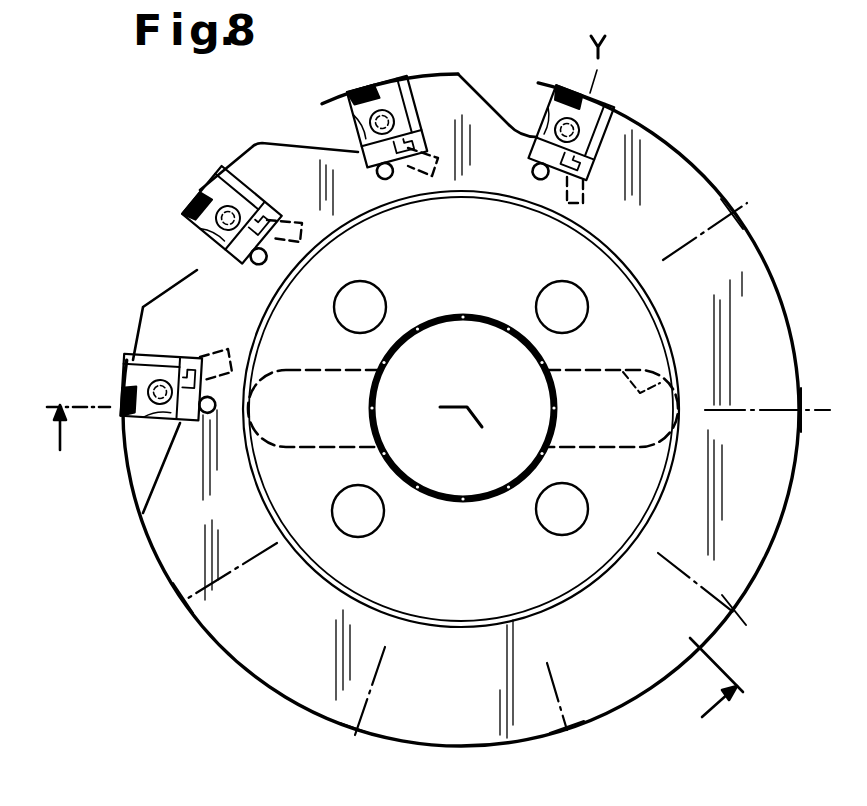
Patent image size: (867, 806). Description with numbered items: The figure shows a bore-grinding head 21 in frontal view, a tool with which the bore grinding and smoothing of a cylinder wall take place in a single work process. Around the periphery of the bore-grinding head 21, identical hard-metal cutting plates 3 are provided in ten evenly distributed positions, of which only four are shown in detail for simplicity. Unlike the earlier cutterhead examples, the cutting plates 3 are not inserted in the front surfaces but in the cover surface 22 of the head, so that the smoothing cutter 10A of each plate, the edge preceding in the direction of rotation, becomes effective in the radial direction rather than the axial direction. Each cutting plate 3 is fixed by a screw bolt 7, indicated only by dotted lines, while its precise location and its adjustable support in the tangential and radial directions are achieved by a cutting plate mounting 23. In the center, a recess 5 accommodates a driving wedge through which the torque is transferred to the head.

The cutting plate 3 is at (388, 83).
The recess 5 is at (660, 383).
The screw bolt 7 is at (203, 200).
The smoothing cutter 10A is at (203, 193).
The bore-grinding head 21 is at (438, 400).
The cover surface 22 is at (690, 167).
The cutting plate mounting 23 is at (238, 178).